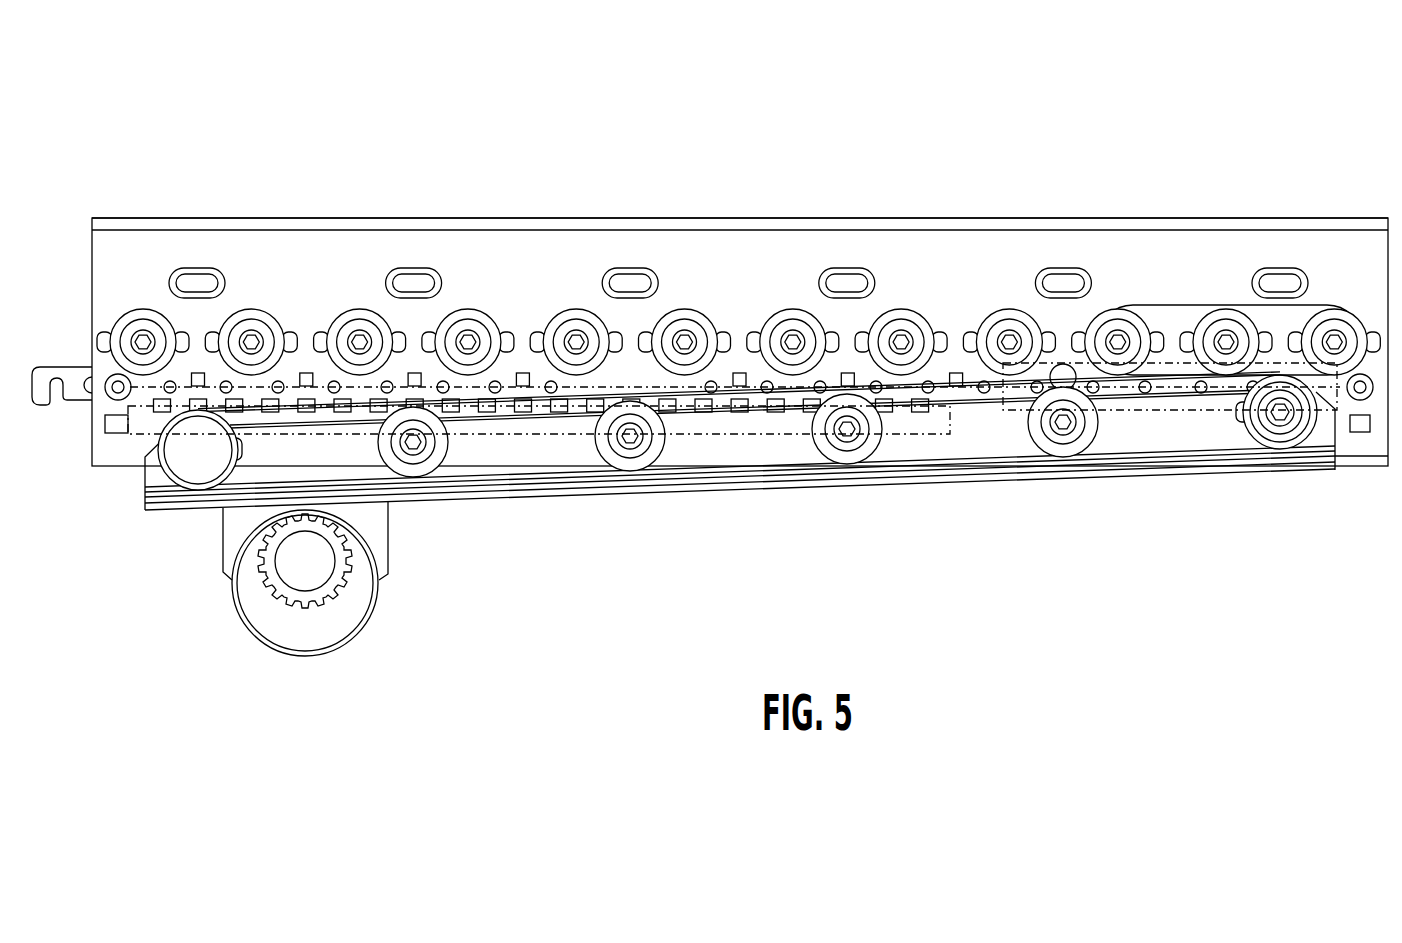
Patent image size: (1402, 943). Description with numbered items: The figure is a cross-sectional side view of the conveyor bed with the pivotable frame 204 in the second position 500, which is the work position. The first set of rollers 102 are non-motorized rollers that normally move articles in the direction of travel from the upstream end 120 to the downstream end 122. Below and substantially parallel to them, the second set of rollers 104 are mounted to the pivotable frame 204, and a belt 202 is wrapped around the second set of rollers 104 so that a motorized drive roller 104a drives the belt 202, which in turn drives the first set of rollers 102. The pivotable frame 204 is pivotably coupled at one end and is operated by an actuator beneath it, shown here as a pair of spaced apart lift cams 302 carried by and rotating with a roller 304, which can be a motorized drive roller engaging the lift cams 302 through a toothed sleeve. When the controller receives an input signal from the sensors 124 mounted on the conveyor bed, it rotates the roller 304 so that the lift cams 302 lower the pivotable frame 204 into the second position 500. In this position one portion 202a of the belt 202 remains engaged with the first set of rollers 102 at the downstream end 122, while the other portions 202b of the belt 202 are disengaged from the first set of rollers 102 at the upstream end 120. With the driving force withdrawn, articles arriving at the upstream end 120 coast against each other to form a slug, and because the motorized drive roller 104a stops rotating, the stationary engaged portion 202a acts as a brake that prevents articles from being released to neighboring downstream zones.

The second position 500 is at (608, 105).
The upstream end 120 is at (278, 250).
The downstream end 122 is at (1167, 250).
The sensors 124 is at (415, 285).
The first set of rollers 102 is at (785, 345).
The second set of rollers 104 is at (1048, 433).
The motorized drive roller 104a is at (183, 462).
The belt 202 is at (542, 400).
The portion of the belt 202a is at (1223, 408).
The other portions of the belt 202b is at (575, 436).
The pivotable frame 204 is at (1145, 433).
The lift cams 302 is at (258, 572).
The roller 304 is at (300, 580).